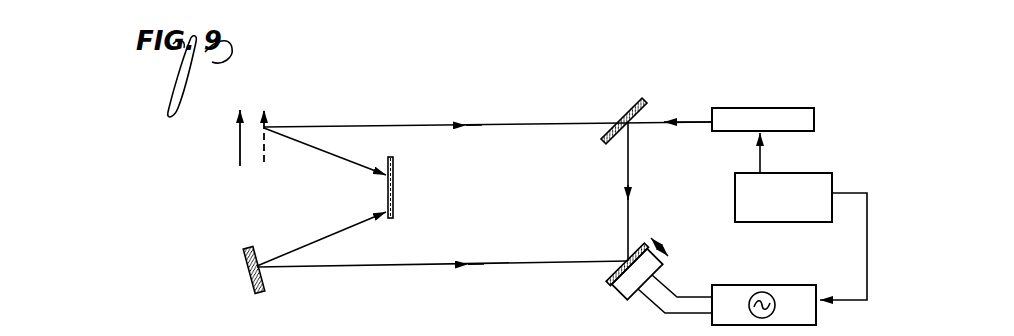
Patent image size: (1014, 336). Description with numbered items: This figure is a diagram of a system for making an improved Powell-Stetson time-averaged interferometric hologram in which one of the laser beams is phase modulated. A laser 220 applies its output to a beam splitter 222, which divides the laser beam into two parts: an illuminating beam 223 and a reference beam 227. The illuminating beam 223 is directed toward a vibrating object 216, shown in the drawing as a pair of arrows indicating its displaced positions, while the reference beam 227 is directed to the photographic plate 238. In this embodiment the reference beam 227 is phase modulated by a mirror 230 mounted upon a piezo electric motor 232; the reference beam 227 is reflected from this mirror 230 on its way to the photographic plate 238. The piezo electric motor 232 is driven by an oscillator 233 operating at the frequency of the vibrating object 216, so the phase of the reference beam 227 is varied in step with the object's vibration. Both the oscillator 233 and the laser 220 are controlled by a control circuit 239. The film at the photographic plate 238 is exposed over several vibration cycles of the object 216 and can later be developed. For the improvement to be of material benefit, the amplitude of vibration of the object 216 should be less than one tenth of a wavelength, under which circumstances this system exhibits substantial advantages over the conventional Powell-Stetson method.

The vibrating object 216 is at (264, 160).
The laser 220 is at (780, 108).
The beam splitter 222 is at (630, 106).
The illuminating beam 223 is at (490, 125).
The reference beam 227 is at (630, 218).
The mirror 230 is at (608, 280).
The piezo electric motor 232 is at (625, 289).
The oscillator 233 is at (768, 285).
The photographic plate 238 is at (393, 190).
The control circuit 239 is at (813, 173).